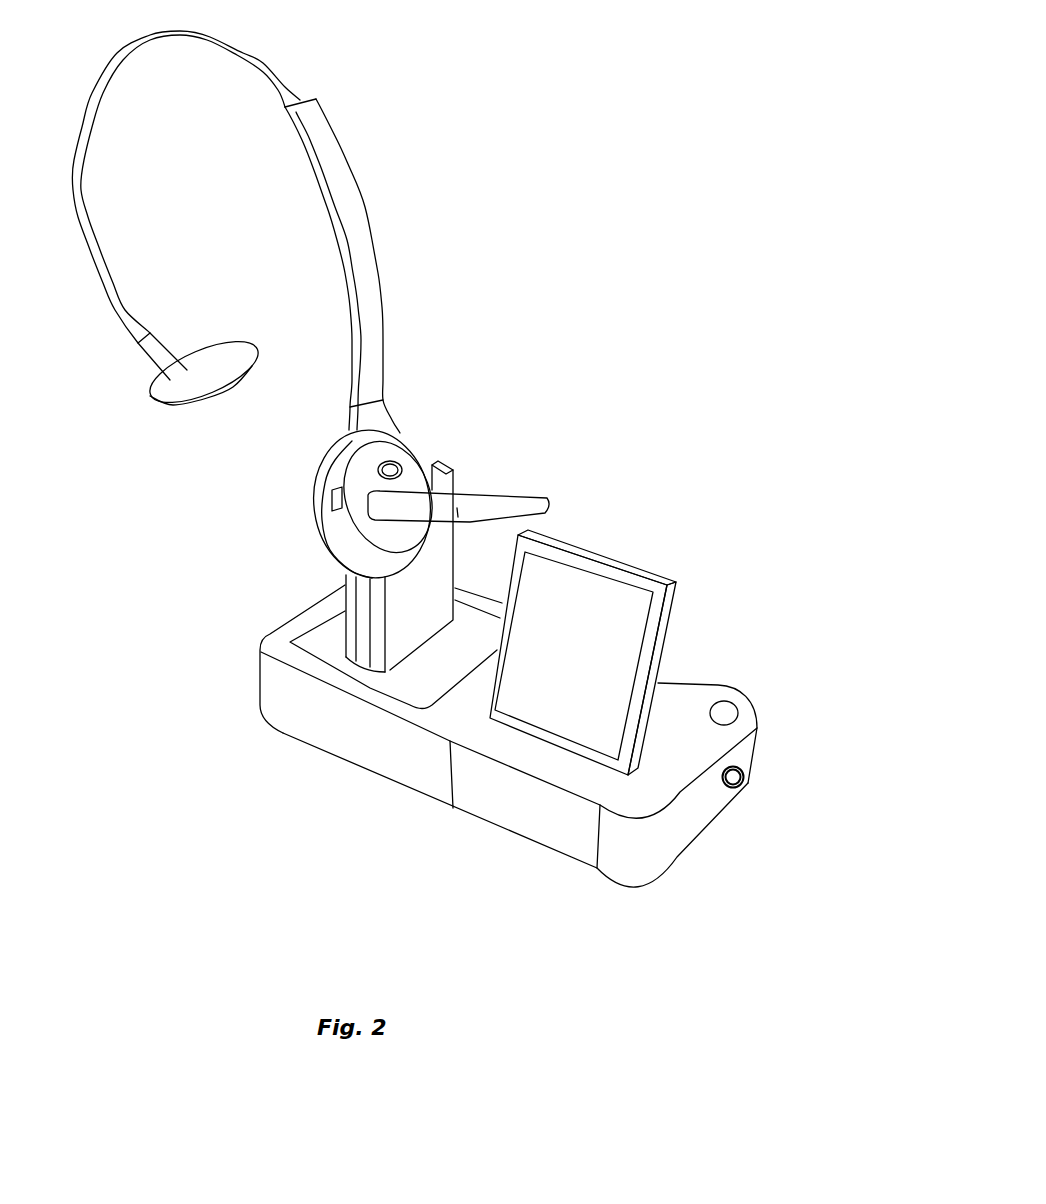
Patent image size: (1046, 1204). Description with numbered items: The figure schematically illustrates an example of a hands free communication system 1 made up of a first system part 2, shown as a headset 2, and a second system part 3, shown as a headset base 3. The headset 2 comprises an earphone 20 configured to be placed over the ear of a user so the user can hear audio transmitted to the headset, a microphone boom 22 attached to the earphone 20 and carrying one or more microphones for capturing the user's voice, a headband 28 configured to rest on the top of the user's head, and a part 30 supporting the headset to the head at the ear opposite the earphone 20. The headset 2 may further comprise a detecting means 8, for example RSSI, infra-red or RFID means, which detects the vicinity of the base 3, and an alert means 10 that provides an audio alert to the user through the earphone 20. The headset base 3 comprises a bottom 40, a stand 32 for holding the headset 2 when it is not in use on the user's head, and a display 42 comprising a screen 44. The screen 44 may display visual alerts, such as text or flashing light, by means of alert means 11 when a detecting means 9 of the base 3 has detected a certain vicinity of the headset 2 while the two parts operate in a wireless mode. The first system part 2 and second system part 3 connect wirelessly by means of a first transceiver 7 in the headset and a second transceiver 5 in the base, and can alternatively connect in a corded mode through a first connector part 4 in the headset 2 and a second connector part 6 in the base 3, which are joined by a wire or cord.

The hands free communication system 1 is at (726, 49).
The first system part 2 is at (428, 139).
The second system part 3 is at (627, 917).
The first connector part 4 is at (333, 503).
The second transceiver 5 is at (524, 736).
The second connector part 6 is at (727, 722).
The first transceiver 7 is at (433, 459).
The detecting means 8 is at (388, 463).
The detecting means 9 is at (745, 777).
The alert means 10 is at (415, 473).
The alert means 11 is at (557, 661).
The earphone 20 is at (433, 459).
The microphone boom 22 is at (513, 505).
The headband 28 is at (247, 53).
The part 30 is at (192, 387).
The stand 32 is at (446, 605).
The bottom 40 is at (388, 753).
The display 42 is at (667, 588).
The screen 44 is at (574, 656).